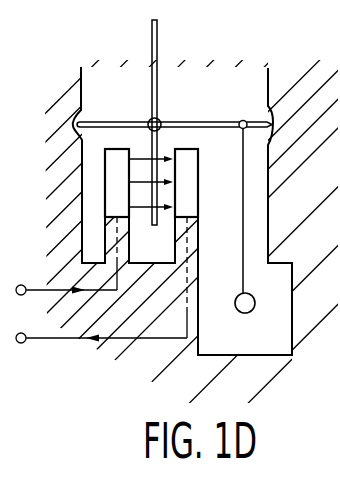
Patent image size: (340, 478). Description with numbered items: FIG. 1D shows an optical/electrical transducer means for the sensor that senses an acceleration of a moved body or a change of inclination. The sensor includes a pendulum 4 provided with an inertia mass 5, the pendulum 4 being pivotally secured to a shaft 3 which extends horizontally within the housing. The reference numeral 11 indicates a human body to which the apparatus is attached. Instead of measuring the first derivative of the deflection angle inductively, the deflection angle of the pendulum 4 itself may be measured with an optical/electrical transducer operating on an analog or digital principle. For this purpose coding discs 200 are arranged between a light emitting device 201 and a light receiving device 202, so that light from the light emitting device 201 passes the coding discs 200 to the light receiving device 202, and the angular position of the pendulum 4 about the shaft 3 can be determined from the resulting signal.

The human body 11 is at (292, 104).
The coding discs 200 is at (158, 60).
The light emitting device 201 is at (117, 163).
The light receiving device 202 is at (187, 163).
The shaft 3 is at (226, 123).
The pendulum 4 is at (246, 238).
The inertia mass 5 is at (253, 300).